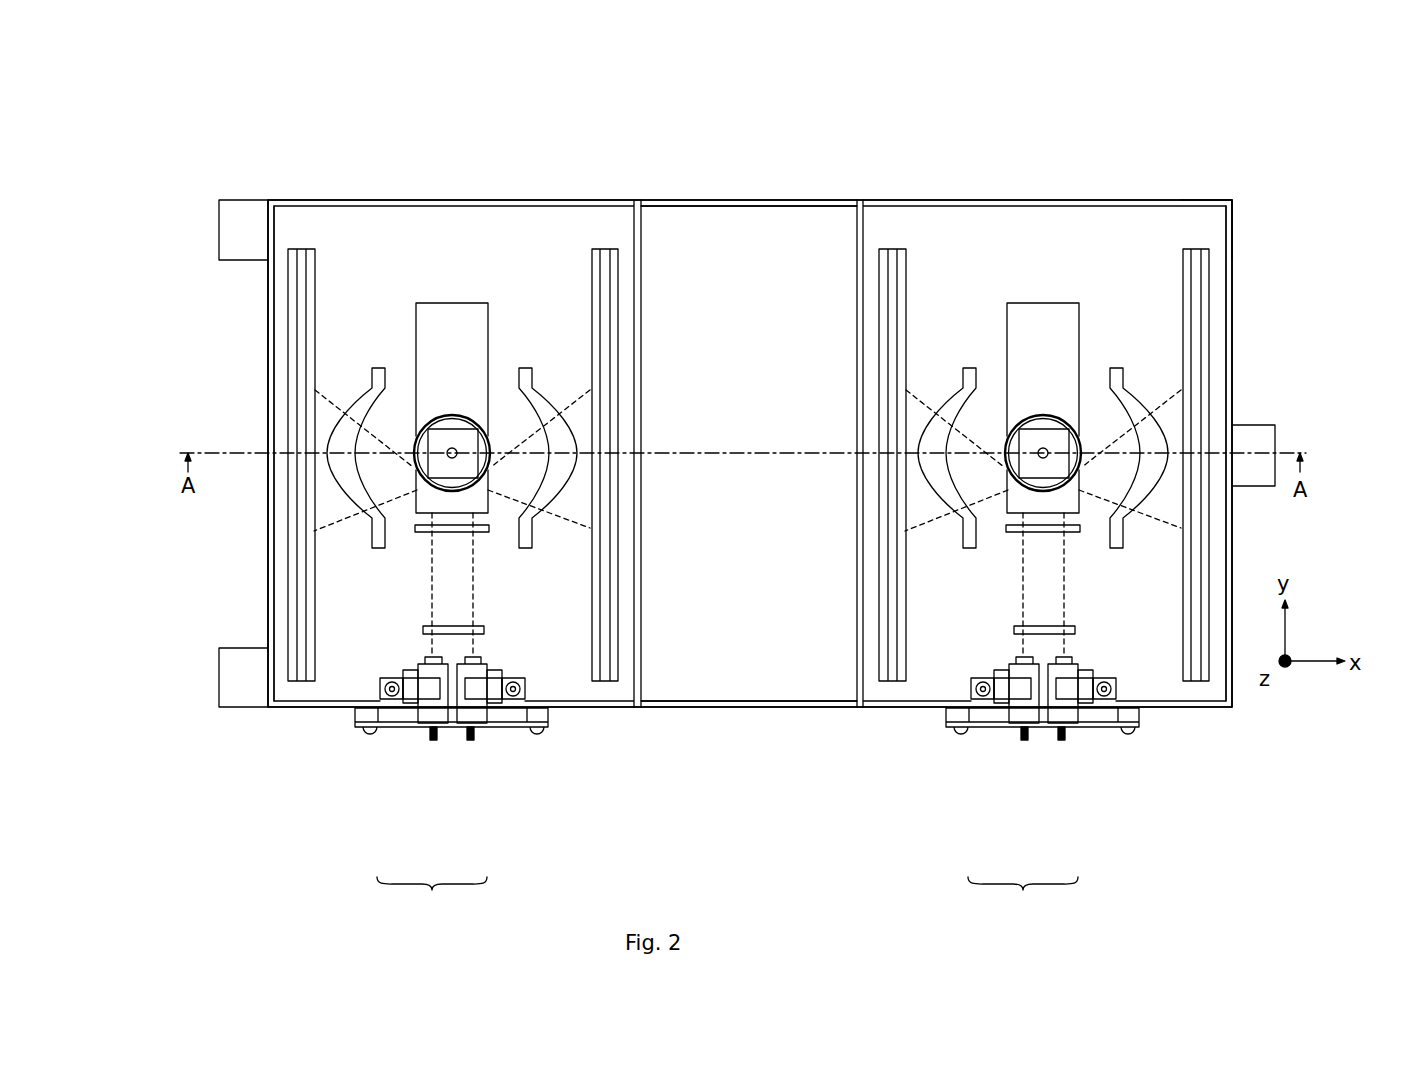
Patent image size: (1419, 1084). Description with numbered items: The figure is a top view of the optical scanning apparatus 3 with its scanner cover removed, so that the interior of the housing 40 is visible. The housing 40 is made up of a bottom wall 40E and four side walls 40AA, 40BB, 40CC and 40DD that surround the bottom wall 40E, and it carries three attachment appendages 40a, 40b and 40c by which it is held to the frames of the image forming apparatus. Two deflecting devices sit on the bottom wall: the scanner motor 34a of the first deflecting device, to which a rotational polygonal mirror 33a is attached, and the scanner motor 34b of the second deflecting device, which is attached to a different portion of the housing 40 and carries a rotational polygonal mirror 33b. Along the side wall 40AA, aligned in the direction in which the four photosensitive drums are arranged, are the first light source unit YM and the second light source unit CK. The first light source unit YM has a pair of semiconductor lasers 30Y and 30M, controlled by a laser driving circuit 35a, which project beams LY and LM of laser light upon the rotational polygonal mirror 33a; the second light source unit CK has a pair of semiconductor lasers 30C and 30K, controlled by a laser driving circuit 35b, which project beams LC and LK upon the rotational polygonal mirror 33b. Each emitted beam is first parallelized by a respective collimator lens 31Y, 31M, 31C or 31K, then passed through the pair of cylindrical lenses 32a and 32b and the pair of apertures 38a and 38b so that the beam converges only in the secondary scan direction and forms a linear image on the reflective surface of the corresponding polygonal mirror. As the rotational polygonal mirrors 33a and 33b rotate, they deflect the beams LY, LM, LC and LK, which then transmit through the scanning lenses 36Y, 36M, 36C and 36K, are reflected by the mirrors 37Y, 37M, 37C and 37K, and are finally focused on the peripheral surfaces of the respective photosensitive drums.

The optical scanning apparatus 3 is at (803, 158).
The semiconductor laser 30Y is at (430, 734).
The semiconductor laser 30M is at (472, 734).
The semiconductor laser 30C is at (1021, 734).
The semiconductor laser 30K is at (1063, 734).
The collimator lens 31Y is at (420, 658).
The collimator lens 31M is at (485, 659).
The collimator lens 31C is at (1010, 659).
The collimator lens 31K is at (1076, 659).
The cylindrical lens 32a is at (418, 630).
The cylindrical lens 32b is at (1009, 630).
The rotational polygonal mirror 33a is at (460, 427).
The rotational polygonal mirror 33b is at (1046, 413).
The scanner motor 34a is at (428, 302).
The scanner motor 34b is at (1025, 302).
The laser driving circuit 35a is at (512, 733).
The laser driving circuit 35b is at (1100, 733).
The scanning lens 36Y is at (378, 367).
The scanning lens 36M is at (532, 367).
The scanning lens 36C is at (968, 367).
The scanning lens 36K is at (1117, 367).
The mirror 37Y is at (307, 249).
The mirror 37M is at (601, 248).
The mirror 37C is at (897, 249).
The mirror 37K is at (1188, 249).
The aperture 38a is at (413, 530).
The aperture 38b is at (1078, 527).
The housing 40 is at (728, 200).
The attachment appendage 40a is at (219, 668).
The attachment appendage 40b is at (219, 232).
The attachment appendage 40c is at (1275, 436).
The side wall 40AA is at (728, 707).
The side wall 40BB is at (265, 518).
The side wall 40CC is at (682, 200).
The side wall 40DD is at (1233, 407).
The bottom wall 40E is at (1215, 230).
The beam of laser light LY is at (327, 405).
The beam of laser light LM is at (588, 392).
The beam of laser light LC is at (910, 395).
The beam of laser light LK is at (1172, 393).
The first light source unit YM is at (432, 899).
The second light source unit CK is at (1023, 899).